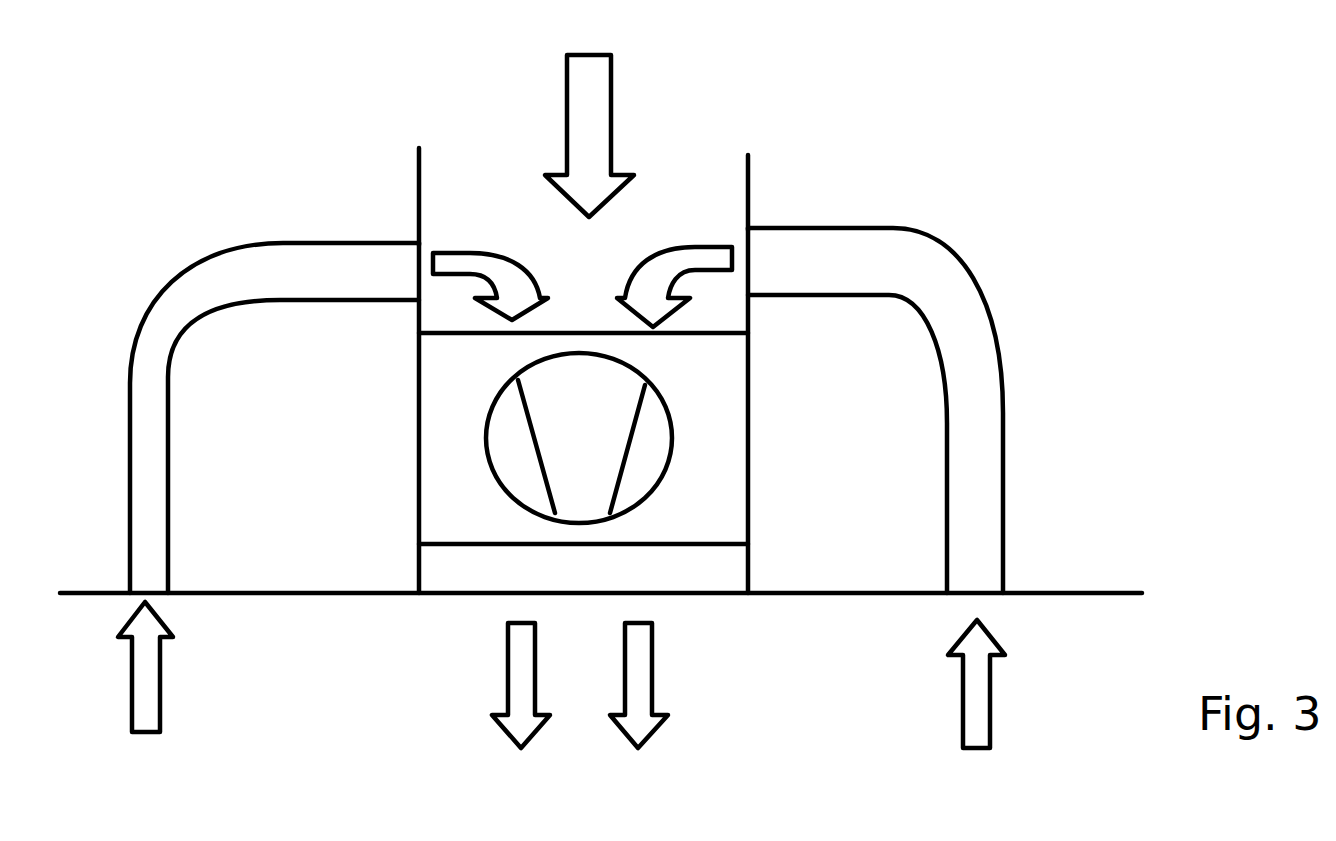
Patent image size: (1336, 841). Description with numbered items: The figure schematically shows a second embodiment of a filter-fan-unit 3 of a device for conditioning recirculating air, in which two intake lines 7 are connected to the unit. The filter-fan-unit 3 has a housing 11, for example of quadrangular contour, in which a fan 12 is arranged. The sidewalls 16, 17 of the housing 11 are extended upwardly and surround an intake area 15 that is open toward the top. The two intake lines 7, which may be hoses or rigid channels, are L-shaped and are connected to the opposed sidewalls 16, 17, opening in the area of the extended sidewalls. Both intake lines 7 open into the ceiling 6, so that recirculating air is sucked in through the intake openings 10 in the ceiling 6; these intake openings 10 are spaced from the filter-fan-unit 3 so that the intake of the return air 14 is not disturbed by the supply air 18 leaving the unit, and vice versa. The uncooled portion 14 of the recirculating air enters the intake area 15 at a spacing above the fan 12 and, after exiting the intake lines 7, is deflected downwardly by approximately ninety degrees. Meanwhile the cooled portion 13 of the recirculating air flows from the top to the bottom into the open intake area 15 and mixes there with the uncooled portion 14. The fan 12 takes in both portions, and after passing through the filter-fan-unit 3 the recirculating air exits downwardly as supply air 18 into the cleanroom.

The filter-fan-unit 3 is at (360, 175).
The ceiling 6 is at (1100, 593).
The intake line 7 is at (172, 317).
The intake opening 10 is at (147, 589).
The housing 11 is at (751, 428).
The fan 12 is at (562, 427).
The cooled portion of the recirculating air 13 is at (585, 105).
The uncooled portion of the recirculating air 14 is at (455, 262).
The intake area 15 is at (563, 315).
The sidewall 16 is at (421, 173).
The sidewall 17 is at (751, 172).
The supply air 18 is at (637, 697).